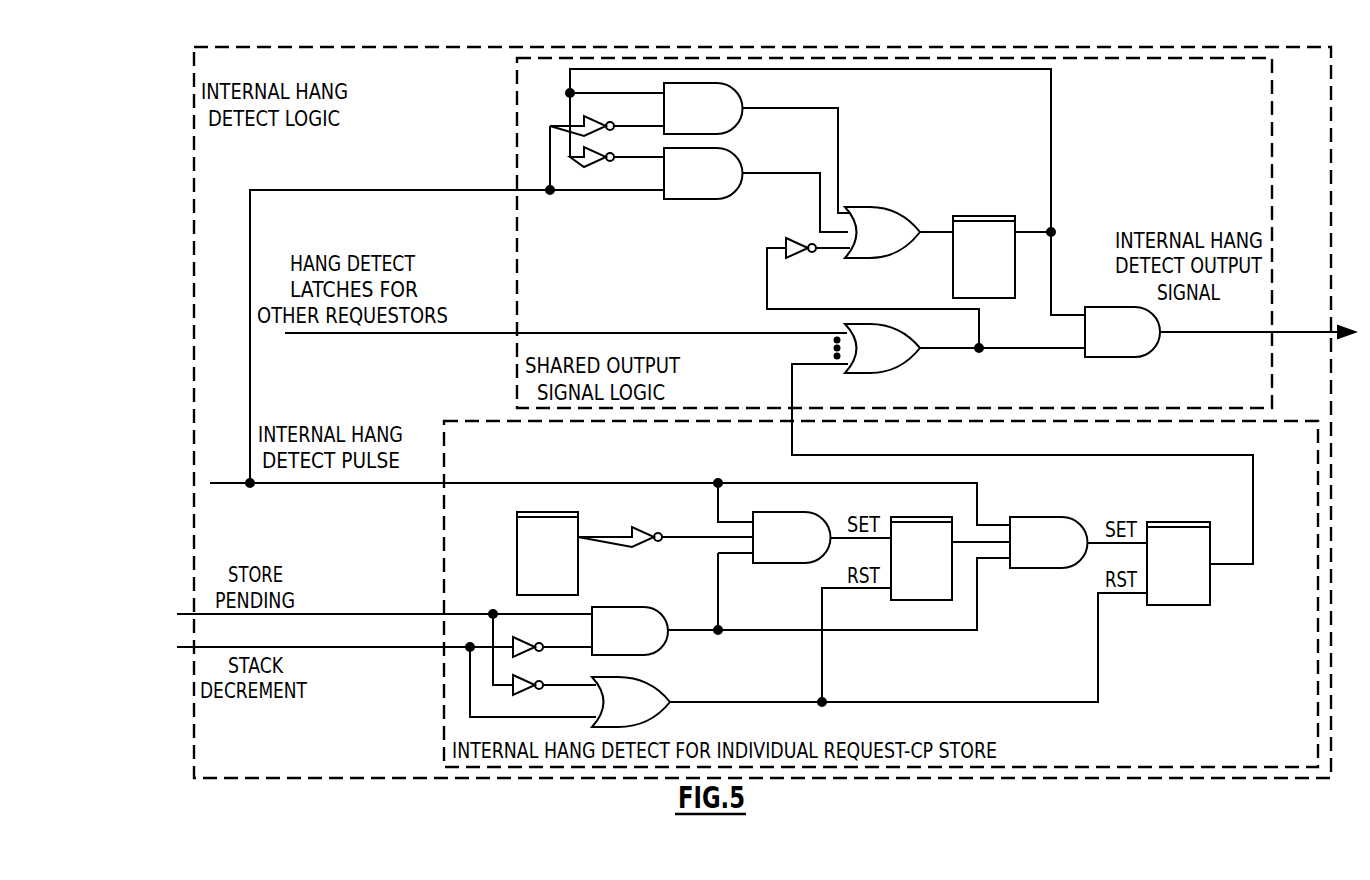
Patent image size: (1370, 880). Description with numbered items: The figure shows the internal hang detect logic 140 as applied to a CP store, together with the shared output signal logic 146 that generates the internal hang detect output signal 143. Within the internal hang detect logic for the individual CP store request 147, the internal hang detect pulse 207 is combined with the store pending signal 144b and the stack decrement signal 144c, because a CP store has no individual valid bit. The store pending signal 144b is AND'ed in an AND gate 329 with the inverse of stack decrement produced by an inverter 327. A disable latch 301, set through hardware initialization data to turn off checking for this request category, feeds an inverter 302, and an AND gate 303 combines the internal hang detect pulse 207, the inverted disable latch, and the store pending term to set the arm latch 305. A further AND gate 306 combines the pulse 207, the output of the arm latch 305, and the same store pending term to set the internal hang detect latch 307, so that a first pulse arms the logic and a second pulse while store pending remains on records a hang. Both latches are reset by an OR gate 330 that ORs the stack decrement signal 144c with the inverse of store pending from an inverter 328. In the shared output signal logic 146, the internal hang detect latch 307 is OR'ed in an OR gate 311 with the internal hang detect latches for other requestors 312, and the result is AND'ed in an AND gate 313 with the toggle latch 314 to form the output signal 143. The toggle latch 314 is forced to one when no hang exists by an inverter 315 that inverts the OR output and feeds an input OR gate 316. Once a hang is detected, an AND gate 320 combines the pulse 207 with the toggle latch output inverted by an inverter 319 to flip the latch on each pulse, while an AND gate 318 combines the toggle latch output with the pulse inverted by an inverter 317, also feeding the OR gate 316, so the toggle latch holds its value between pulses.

The internal hang detect logic 140 is at (313, 49).
The internal hang detect output signal 143 is at (1232, 332).
The store pending signal 144b is at (390, 614).
The stack decrement signal 144c is at (390, 648).
The shared output signal logic 146 is at (517, 386).
The internal hang detect logic for an individual request (CP store) 147 is at (444, 735).
The internal hang detect pulse 207 is at (370, 483).
The disable latch 301 is at (517, 533).
The inverter for disable latch 302 is at (645, 528).
The AND gate 303 is at (790, 512).
The arm latch 305 is at (912, 517).
The AND gate 306 is at (1045, 517).
The internal hang detect latch 307 is at (1168, 522).
The OR gate 311 is at (900, 368).
The internal hang detect latches for other requests 312 is at (483, 333).
The AND gate 313 is at (1115, 307).
The toggle latch 314 is at (972, 216).
The inverter 315 is at (793, 259).
The OR gate 316 is at (876, 208).
The inverter for hang detect pulse 317 is at (598, 118).
The AND gate 318 is at (737, 99).
The inverter for toggle latch output 319 is at (598, 166).
The AND gate 320 is at (737, 164).
The inverter for stack decrement 327 is at (525, 639).
The inverter for store pending 328 is at (525, 677).
The AND gate 329 is at (612, 607).
The OR gate 330 is at (652, 685).